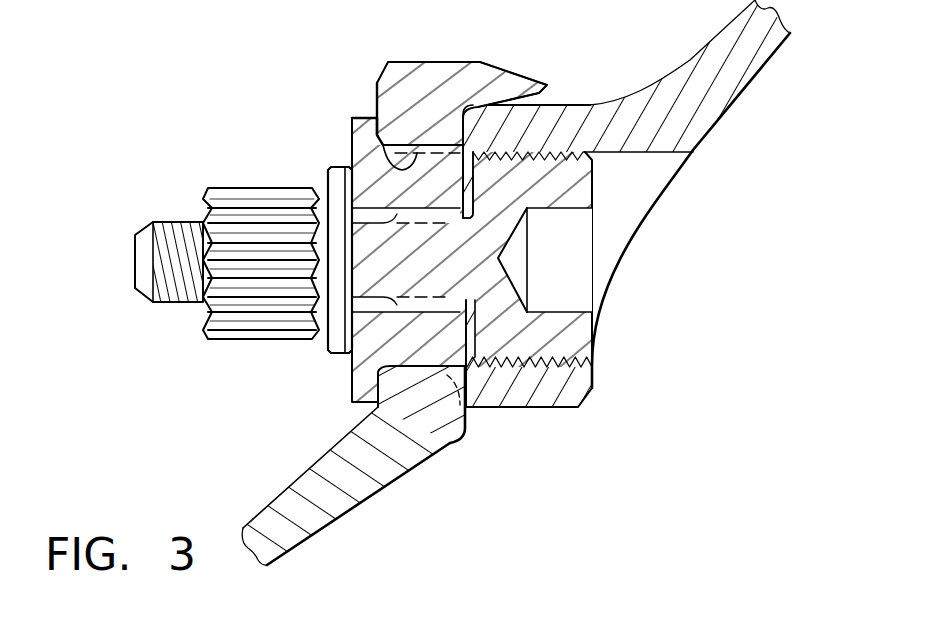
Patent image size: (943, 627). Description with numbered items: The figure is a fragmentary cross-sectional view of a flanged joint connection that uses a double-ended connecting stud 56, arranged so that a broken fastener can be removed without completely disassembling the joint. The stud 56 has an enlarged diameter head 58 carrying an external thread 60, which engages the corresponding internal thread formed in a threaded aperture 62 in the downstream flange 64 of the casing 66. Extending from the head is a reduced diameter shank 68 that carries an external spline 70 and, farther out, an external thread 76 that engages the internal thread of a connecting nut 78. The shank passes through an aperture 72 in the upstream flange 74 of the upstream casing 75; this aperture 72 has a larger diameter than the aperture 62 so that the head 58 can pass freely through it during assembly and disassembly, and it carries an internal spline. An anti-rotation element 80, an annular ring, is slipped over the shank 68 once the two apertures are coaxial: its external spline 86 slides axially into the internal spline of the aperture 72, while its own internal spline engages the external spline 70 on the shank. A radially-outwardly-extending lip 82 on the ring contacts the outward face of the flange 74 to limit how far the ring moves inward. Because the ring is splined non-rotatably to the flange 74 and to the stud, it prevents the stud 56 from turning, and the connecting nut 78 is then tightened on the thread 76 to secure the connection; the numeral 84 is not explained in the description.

The stud 56 is at (447, 268).
The enlarged diameter head 58 is at (577, 192).
The external thread 60 is at (547, 155).
The threaded aperture 62 is at (655, 155).
The downstream flange 64 is at (500, 127).
The casing 66 is at (737, 77).
The reduced diameter shank 68 is at (333, 338).
The external spline 70 is at (487, 275).
The aperture 72 is at (410, 160).
The upstream flange 74 is at (408, 73).
The upstream casing 75 is at (310, 482).
The external thread 76 is at (158, 247).
The connecting nut 78 is at (258, 203).
The anti-rotation element 80 is at (435, 183).
The radially-outwardly-extending lip 82 is at (367, 118).
The clamp side wall 84 is at (377, 103).
The external spline 86 is at (467, 413).